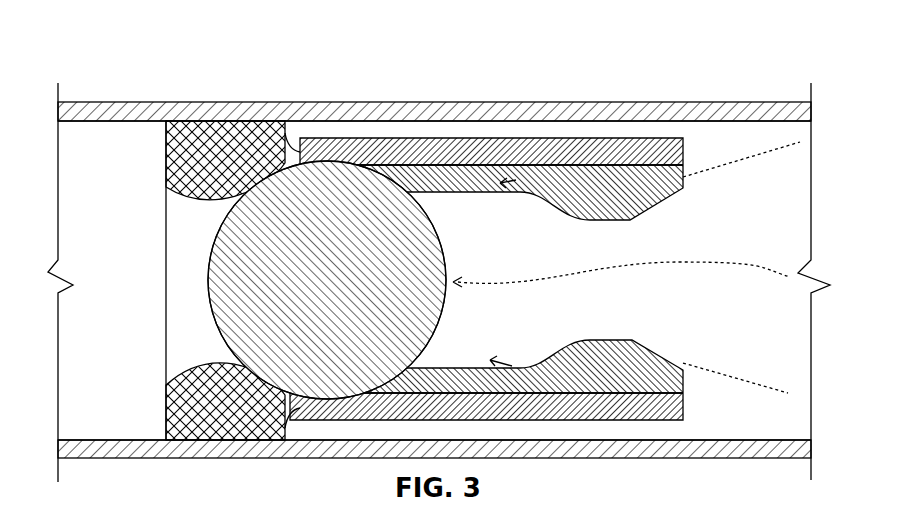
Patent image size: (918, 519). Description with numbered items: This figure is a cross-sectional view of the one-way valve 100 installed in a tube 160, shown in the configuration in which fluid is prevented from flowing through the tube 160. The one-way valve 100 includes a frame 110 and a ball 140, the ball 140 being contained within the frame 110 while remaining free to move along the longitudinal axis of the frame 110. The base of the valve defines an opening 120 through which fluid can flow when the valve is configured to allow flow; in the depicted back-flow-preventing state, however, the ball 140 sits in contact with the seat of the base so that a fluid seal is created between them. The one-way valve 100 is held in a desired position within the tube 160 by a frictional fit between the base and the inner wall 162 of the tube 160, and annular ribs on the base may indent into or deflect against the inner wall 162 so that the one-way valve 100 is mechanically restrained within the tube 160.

The one-way valve 100 is at (148, 158).
The frame 110 is at (166, 401).
The opening 120 is at (195, 255).
The ball 140 is at (448, 244).
The tube 160 is at (627, 100).
The inner wall 162 is at (686, 128).